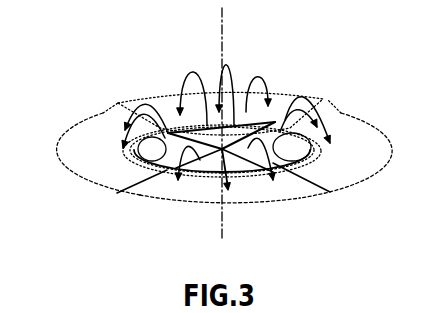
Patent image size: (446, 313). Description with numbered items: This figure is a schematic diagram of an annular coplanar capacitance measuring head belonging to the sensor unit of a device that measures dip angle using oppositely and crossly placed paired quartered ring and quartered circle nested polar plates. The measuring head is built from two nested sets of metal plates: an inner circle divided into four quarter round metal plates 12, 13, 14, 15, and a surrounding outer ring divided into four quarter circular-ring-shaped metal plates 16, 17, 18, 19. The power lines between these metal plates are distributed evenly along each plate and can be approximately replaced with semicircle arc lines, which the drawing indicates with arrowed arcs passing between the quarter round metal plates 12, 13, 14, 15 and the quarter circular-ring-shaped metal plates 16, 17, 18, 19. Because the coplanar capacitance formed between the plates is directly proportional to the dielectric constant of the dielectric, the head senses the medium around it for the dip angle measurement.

The quarter round metal plate 12 is at (208, 124).
The quarter round metal plate 13 is at (168, 132).
The quarter round metal plate 14 is at (233, 163).
The quarter round metal plate 15 is at (280, 133).
The quarter circular-ring-shaped metal plate 16 is at (203, 105).
The quarter circular-ring-shaped metal plate 17 is at (96, 144).
The quarter circular-ring-shaped metal plate 18 is at (200, 192).
The quarter circular-ring-shaped metal plate 19 is at (340, 130).